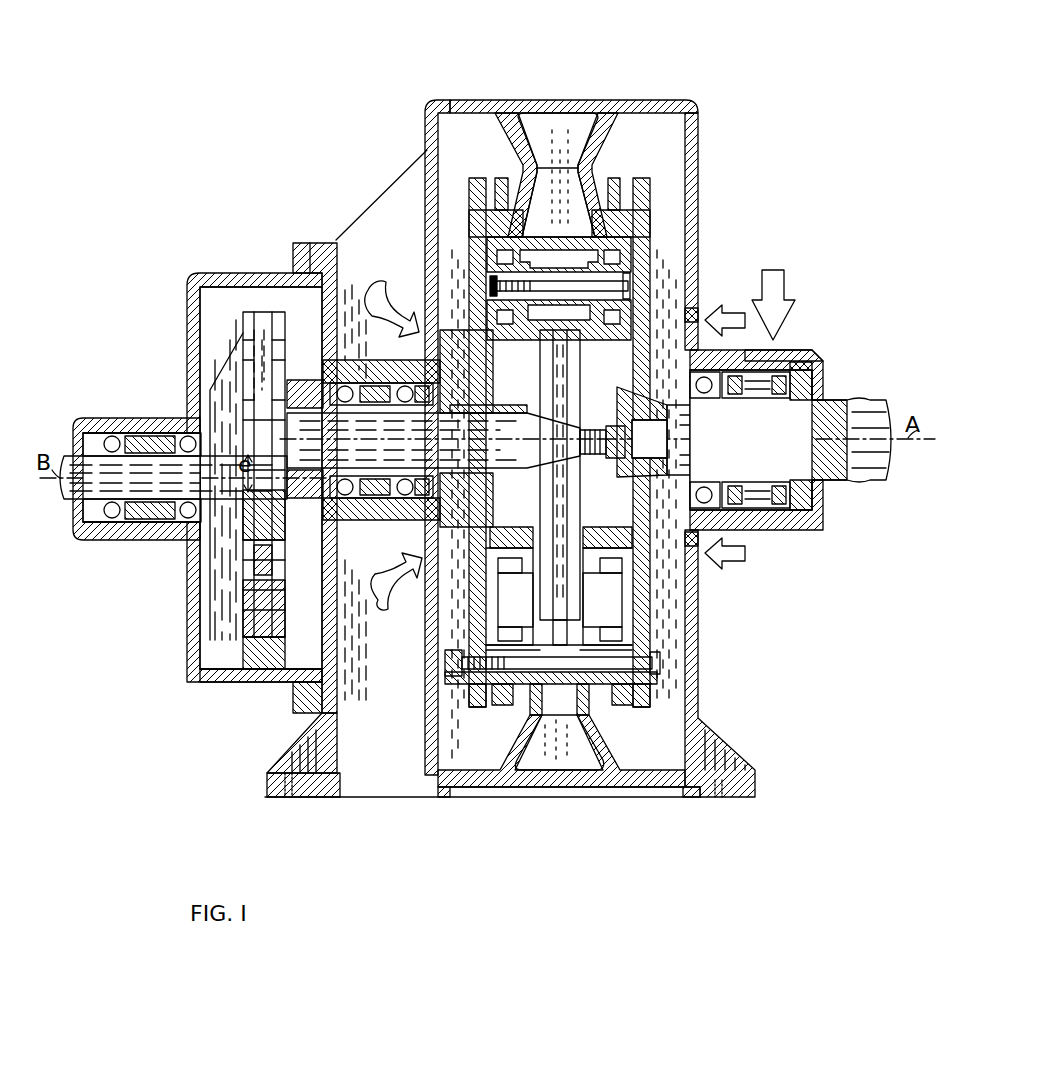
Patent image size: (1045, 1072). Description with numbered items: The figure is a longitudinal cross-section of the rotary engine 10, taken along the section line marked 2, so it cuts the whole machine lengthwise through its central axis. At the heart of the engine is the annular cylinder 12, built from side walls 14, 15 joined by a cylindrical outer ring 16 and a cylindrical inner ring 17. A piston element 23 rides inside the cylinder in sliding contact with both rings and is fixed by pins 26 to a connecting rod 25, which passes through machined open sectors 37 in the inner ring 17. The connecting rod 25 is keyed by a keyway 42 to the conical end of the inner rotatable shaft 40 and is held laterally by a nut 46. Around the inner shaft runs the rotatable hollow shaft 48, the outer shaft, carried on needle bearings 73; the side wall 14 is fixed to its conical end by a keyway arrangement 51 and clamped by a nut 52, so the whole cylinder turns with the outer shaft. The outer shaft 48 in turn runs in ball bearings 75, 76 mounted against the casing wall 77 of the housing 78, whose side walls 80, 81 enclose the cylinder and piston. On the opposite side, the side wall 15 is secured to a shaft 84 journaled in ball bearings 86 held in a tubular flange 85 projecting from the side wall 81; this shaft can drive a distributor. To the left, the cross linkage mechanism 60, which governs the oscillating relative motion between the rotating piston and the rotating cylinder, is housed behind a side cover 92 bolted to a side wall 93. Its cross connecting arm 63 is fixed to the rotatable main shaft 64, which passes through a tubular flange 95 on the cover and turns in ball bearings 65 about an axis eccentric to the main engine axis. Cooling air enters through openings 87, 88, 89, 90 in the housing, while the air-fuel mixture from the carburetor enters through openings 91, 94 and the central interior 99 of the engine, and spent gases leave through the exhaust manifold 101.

The section line 2- 2 is at (556, 95).
The rotary engine 10 is at (330, 126).
The annular cylinder 12 is at (614, 168).
The side wall 14 is at (470, 175).
The side wall 15 is at (645, 185).
The cylindrical outer ring 16 is at (520, 160).
The cylindrical inner ring 17 is at (640, 330).
The piston element 23 is at (653, 192).
The connecting rod 25 is at (600, 597).
The pins 26 is at (492, 257).
The machined open sectors 37 is at (655, 300).
The rotatable shaft 40 is at (388, 440).
The keyway 42 is at (500, 285).
The nut 46 is at (650, 548).
The rotatable hollow shaft 48 is at (298, 360).
The keyway arrangement 51 is at (470, 335).
The nut 52 is at (480, 475).
The cross linkage mechanism 60 is at (223, 320).
The cross connecting arm 63 is at (225, 368).
The rotatable main shaft 64 is at (160, 480).
The ball bearings 65 is at (192, 505).
The needle bearings 73 is at (255, 520).
The ball bearing 75 is at (273, 672).
The ball bearing 76 is at (297, 670).
The casing wall 77 is at (333, 660).
The housing 78 is at (486, 98).
The side wall 80 is at (440, 150).
The side wall 81 is at (697, 133).
The shaft 84 is at (818, 530).
The tubular flange 85 is at (860, 525).
The ball bearings 86 is at (747, 538).
The opening 87 is at (698, 316).
The opening 88 is at (445, 330).
The opening 89 is at (435, 572).
The opening 90 is at (697, 566).
The opening 91 is at (778, 349).
The side cover 92 is at (250, 285).
The side wall 93 is at (315, 243).
The opening 94 is at (863, 400).
The tubular flange 95 is at (165, 420).
The central interior 99 is at (612, 560).
The exhaust manifold 101 is at (575, 135).